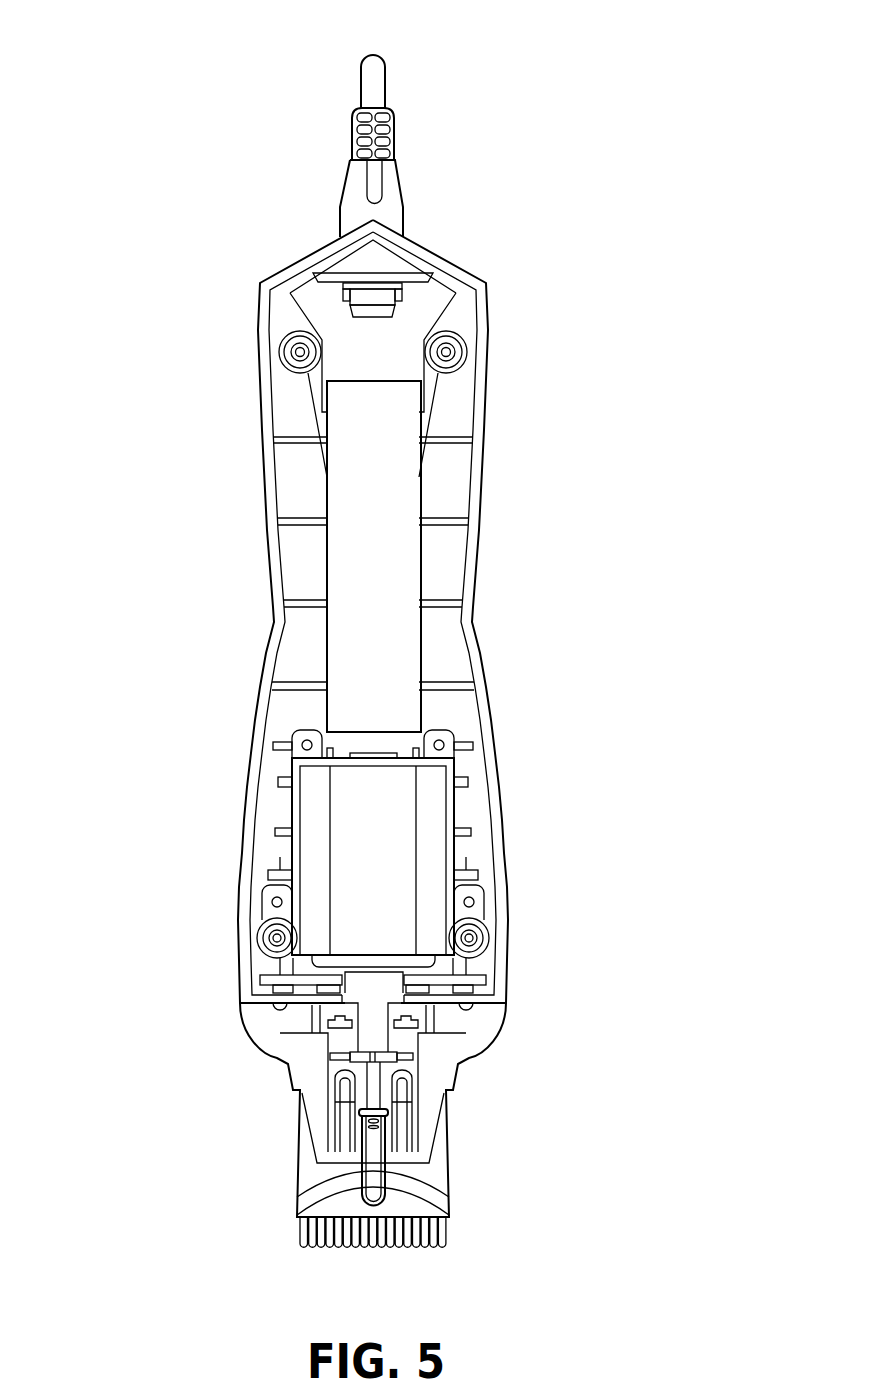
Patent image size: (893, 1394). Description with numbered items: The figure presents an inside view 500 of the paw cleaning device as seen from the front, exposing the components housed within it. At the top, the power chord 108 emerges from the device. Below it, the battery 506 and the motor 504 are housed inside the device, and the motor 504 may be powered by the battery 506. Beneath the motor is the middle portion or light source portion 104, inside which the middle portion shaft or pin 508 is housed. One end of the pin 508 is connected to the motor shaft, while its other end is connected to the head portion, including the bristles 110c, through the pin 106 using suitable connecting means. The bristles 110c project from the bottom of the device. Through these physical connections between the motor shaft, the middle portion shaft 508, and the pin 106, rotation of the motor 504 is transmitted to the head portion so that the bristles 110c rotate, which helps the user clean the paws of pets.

The inside view 500 is at (140, 106).
The power chord 108 is at (405, 185).
The battery 506 is at (387, 478).
The motor 504 is at (420, 884).
The middle portion 104 is at (277, 1059).
The middle portion shaft 508 is at (372, 1072).
The pin 106 is at (374, 1140).
The bristles 110c is at (442, 1243).